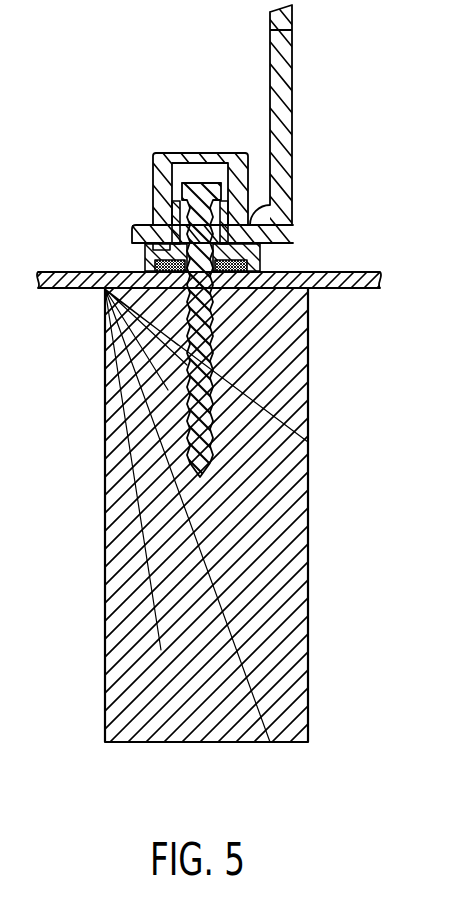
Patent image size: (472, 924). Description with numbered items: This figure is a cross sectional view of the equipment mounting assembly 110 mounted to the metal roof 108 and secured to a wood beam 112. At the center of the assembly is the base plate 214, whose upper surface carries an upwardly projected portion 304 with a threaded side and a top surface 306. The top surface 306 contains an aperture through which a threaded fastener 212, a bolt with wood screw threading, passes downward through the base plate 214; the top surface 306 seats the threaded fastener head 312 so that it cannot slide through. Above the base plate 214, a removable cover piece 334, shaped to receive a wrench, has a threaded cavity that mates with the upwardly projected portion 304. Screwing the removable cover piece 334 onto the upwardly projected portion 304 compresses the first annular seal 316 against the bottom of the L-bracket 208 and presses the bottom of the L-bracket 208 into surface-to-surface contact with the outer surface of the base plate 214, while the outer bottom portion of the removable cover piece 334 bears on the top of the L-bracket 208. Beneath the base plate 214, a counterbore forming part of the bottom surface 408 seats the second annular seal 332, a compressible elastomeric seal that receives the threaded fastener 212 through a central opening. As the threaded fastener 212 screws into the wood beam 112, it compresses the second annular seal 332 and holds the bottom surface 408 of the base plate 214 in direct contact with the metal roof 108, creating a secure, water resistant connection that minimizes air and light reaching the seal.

The equipment mounting assembly 110 is at (140, 50).
The metal roof 108 is at (327, 292).
The wood beam 112 is at (308, 510).
The L-bracket 208 is at (293, 62).
The threaded fastener 212 is at (212, 400).
The base plate 214 is at (257, 257).
The upwardly projected portion 304 is at (156, 205).
The top surface 306 is at (222, 245).
The threaded fastener head 312 is at (162, 152).
The first annular seal 316 is at (160, 247).
The second annular seal 332 is at (166, 289).
The removable cover piece 334 is at (200, 152).
The bottom surface 408 is at (257, 265).